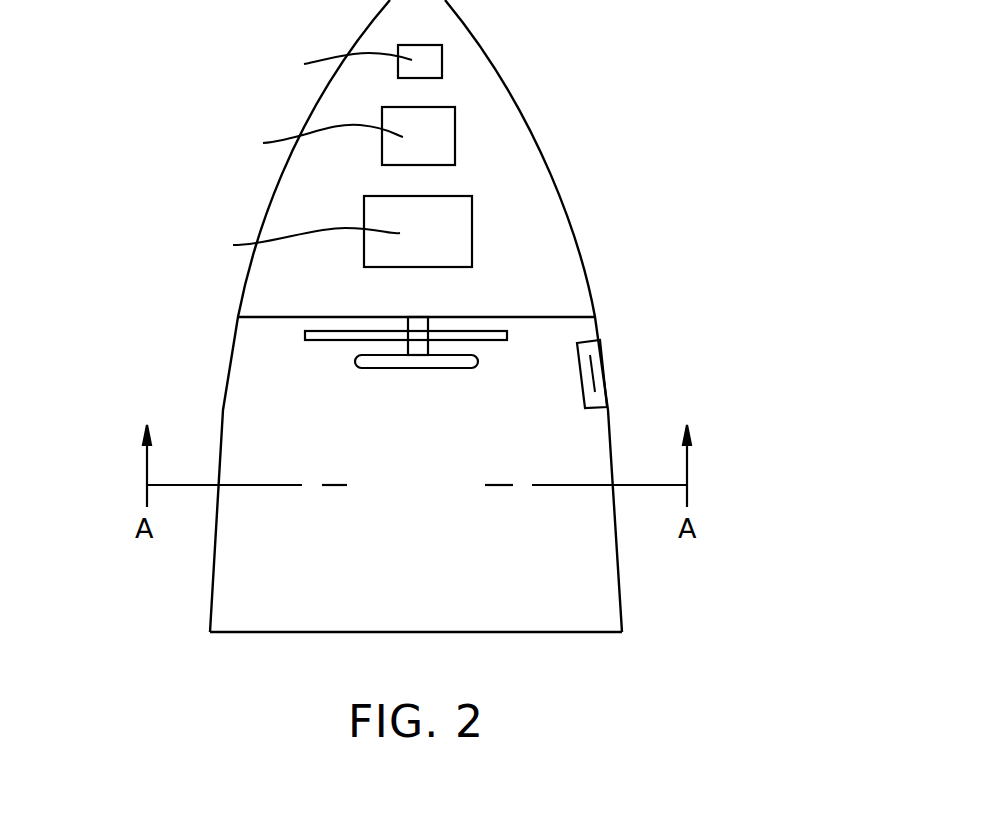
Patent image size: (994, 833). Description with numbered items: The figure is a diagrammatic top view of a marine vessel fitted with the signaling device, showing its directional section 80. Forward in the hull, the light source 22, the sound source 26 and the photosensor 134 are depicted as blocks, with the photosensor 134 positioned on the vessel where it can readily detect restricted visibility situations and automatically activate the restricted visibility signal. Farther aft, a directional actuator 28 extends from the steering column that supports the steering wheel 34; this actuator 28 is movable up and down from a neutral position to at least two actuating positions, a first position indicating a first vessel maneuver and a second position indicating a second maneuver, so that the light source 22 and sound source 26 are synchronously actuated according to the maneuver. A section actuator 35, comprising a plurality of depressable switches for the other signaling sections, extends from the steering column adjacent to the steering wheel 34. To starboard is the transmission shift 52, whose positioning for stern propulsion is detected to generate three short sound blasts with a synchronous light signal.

The directional section 80 is at (118, 78).
The light source 22 is at (438, 59).
The sound source 26 is at (448, 135).
The photosensor 134 is at (463, 232).
The directional actuator 28 is at (317, 340).
The section actuator 35 is at (488, 340).
The steering wheel 34 is at (387, 368).
The transmission shift 52 is at (593, 362).